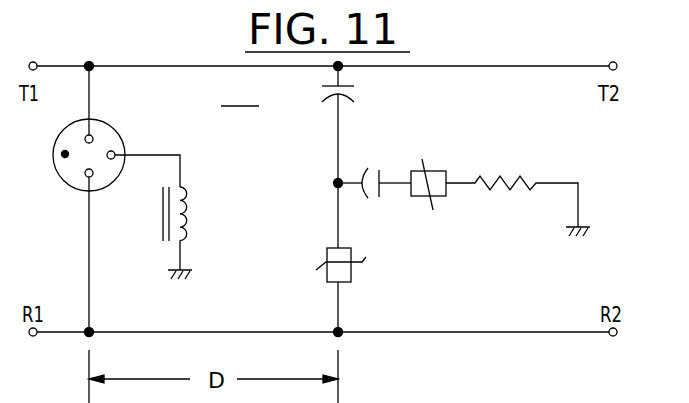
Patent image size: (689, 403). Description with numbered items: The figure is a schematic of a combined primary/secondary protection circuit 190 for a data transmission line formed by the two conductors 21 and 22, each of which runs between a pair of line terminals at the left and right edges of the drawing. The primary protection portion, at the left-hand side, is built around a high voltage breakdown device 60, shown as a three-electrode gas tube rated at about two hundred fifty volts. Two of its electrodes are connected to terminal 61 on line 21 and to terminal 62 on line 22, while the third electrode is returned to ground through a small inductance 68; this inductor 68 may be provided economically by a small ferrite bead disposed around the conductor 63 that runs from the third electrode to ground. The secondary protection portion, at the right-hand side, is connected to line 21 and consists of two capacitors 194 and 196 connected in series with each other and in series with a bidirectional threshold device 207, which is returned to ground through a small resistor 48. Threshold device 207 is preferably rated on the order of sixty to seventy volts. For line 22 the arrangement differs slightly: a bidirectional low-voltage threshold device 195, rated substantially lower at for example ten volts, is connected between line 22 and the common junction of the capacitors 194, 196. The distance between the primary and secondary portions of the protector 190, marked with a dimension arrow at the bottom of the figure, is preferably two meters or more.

The combined primary/secondary protection circuit 190 is at (240, 95).
The conductor 21 is at (146, 68).
The conductor 22 is at (222, 332).
The high voltage breakdown device 60 is at (110, 121).
The terminal 61 is at (91, 68).
The terminal 62 is at (92, 331).
The conductor 63 is at (148, 154).
The inductance 68 is at (188, 220).
The capacitor 194 is at (350, 94).
The bidirectional low-voltage threshold device 195 is at (352, 275).
The capacitor 196 is at (372, 173).
The bidirectional threshold device 207 is at (417, 197).
The resistor 48 is at (507, 183).